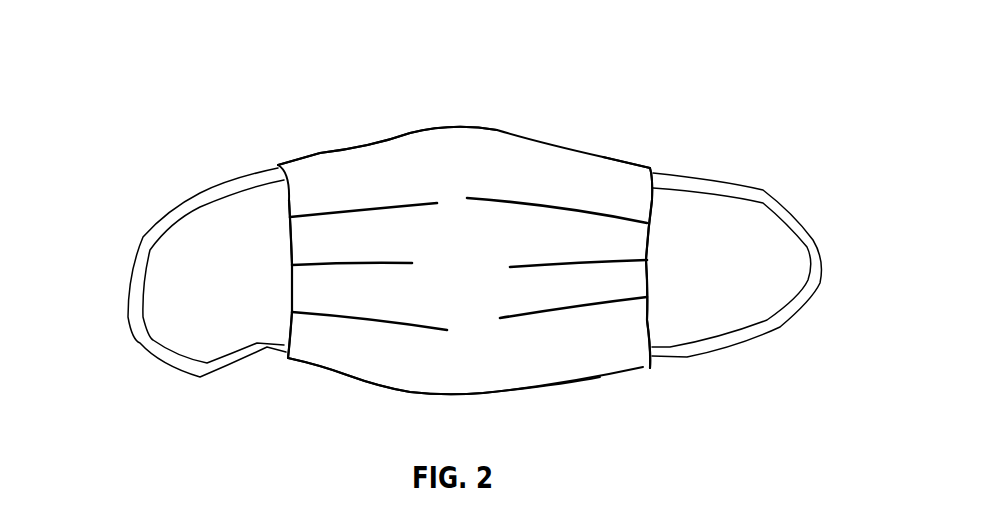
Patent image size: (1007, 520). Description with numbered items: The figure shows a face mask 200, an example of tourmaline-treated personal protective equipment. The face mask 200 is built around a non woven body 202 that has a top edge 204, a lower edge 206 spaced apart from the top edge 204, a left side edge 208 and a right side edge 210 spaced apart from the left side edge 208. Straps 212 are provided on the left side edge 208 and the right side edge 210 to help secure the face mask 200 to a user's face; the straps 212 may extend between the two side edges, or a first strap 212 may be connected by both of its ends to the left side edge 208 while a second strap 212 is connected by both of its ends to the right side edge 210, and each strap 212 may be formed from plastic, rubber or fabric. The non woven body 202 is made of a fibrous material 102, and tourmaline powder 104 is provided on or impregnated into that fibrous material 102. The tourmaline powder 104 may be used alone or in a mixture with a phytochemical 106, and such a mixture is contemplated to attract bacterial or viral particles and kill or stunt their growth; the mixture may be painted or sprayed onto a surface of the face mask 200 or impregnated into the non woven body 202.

The face mask 200 is at (504, 66).
The non woven body 202 is at (497, 155).
The fibrous material 102 is at (377, 167).
The tourmaline powder 104 is at (457, 375).
The phytochemical 106 is at (600, 175).
The top edge 204 is at (320, 155).
The lower edge 206 is at (340, 375).
The left side edge 208 is at (290, 243).
The right side edge 210 is at (642, 262).
The straps 212 is at (153, 228).